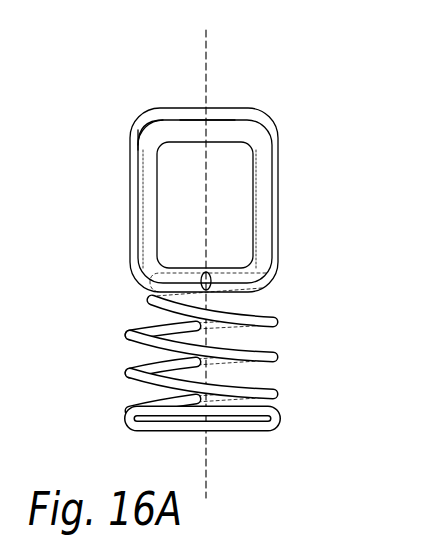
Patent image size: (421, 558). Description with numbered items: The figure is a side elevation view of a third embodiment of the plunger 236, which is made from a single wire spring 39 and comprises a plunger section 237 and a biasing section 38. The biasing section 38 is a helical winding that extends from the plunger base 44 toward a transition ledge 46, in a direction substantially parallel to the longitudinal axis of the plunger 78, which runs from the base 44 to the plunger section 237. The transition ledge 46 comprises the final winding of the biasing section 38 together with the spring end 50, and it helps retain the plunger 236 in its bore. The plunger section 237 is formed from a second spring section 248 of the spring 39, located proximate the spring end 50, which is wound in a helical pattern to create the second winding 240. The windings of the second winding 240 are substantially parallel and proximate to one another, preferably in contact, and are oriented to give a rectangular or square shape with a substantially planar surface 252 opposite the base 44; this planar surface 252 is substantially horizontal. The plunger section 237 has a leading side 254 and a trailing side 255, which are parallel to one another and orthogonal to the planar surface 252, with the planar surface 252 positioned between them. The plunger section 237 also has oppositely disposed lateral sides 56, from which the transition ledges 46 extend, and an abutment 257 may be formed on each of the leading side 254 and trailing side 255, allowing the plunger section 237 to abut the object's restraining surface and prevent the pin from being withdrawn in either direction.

The longitudinal axis of the plunger 78 is at (203, 52).
The plunger 236 is at (202, 166).
The plunger section 237 is at (279, 118).
The plunger section trailing side 255 is at (284, 152).
The second winding 240 is at (263, 205).
The plunger section leading side 254 is at (128, 211).
The abutment 257 is at (276, 241).
The planar surface 252 is at (175, 132).
The second spring section 248 is at (218, 132).
The lateral sides 56 is at (150, 110).
The spring end 50 is at (213, 282).
The transition ledge 46 is at (222, 297).
The biasing section 38 is at (202, 376).
The spring 39 is at (130, 378).
The plunger base 44 is at (227, 433).